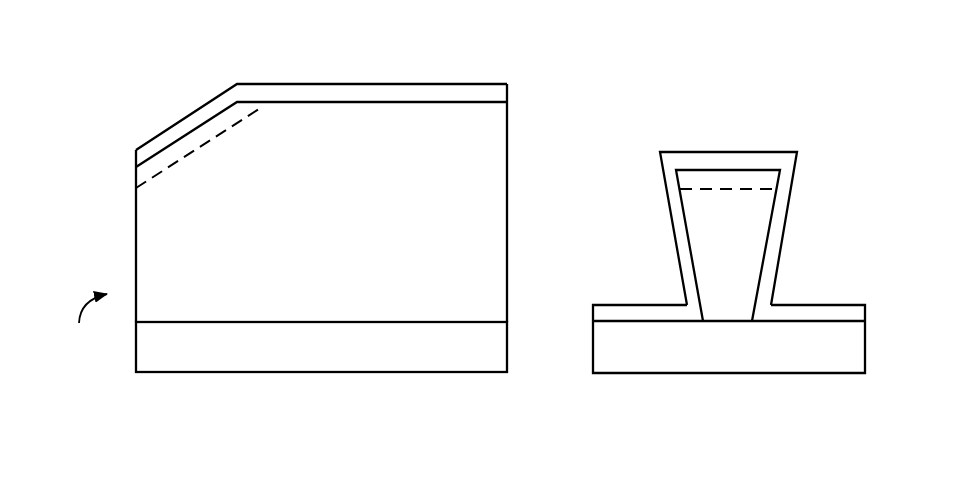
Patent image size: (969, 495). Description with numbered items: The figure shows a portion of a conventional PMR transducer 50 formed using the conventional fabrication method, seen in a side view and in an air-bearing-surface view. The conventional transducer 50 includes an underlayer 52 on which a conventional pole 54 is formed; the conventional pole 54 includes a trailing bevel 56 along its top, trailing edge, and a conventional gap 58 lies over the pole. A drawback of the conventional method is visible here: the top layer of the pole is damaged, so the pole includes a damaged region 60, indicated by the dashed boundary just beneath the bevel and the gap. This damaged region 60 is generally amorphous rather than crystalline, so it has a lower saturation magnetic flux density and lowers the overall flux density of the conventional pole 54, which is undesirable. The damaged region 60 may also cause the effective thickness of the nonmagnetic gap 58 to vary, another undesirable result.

The conventional PMR transducer 50 is at (455, 45).
The underlayer 52 is at (508, 358).
The conventional pole 54 is at (694, 275).
The trailing bevel 56 is at (171, 118).
The conventional gap 58 is at (136, 167).
The damaged region 60 is at (172, 186).